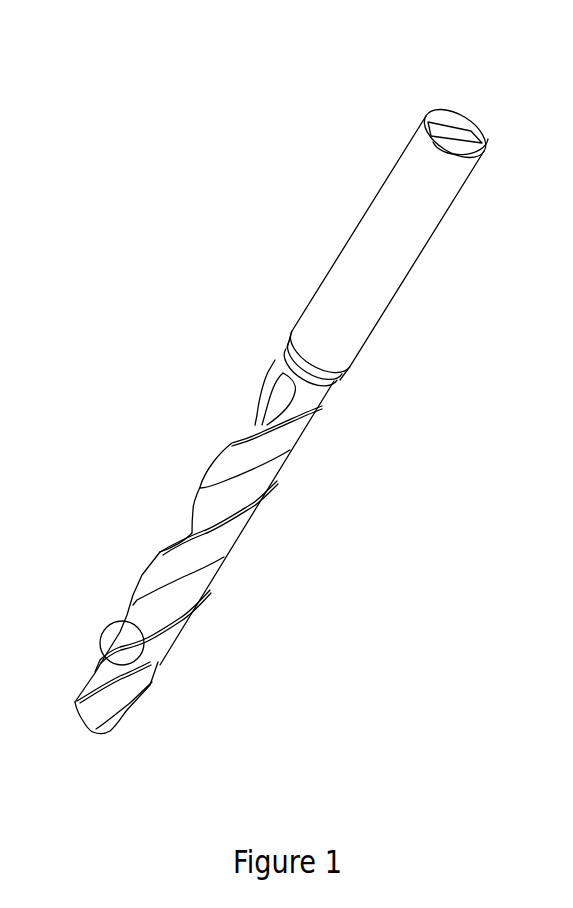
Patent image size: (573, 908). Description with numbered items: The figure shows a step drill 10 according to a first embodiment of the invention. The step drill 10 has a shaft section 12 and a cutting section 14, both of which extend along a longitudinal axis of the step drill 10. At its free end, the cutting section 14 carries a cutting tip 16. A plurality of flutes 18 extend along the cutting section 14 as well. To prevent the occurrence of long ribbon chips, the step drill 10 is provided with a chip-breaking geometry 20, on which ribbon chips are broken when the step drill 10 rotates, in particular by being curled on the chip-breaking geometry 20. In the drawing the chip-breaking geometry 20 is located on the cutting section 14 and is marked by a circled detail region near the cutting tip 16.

The step drill 10 is at (270, 415).
The shaft section 12 is at (403, 250).
The cutting section 14 is at (263, 478).
The cutting tip 16 is at (82, 732).
The flutes 18 is at (198, 583).
The chip-breaking geometry 20 is at (120, 640).